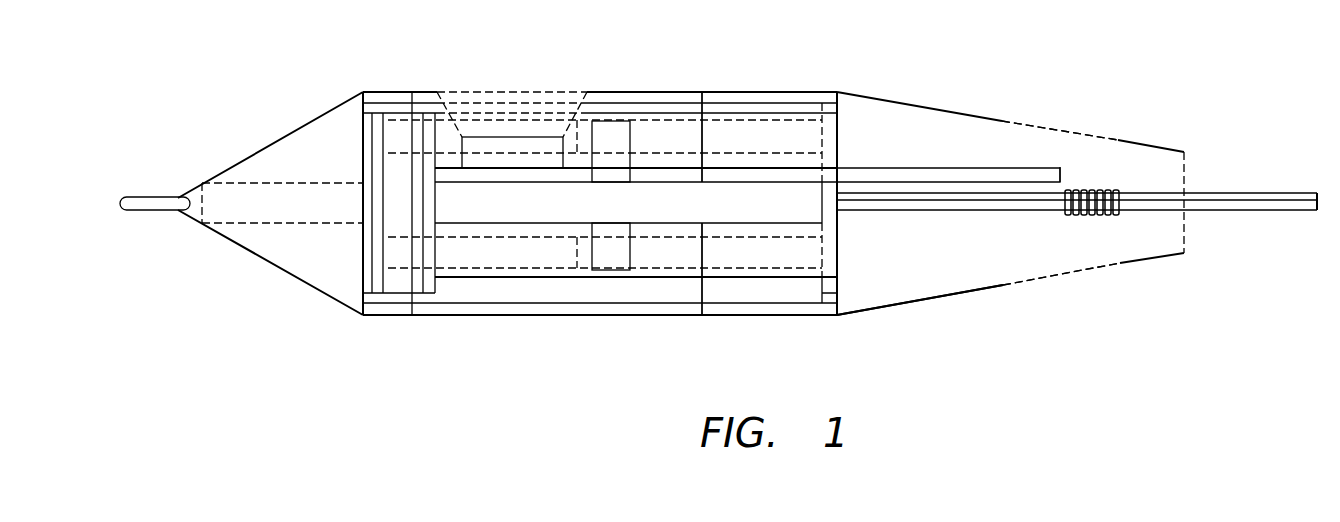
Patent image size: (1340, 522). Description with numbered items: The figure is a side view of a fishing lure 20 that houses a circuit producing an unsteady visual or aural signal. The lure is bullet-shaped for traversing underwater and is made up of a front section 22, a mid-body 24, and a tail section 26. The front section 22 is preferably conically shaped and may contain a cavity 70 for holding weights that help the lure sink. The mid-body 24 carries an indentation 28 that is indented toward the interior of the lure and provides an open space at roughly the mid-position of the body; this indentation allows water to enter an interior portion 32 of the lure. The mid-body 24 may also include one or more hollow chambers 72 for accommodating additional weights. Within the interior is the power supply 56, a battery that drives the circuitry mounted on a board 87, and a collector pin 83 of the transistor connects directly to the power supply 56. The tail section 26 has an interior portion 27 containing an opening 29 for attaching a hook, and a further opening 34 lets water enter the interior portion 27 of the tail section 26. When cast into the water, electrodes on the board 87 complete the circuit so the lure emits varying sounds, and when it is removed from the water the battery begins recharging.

The fishing lure 20 is at (1276, 110).
The front section 22 is at (273, 270).
The mid-body 24 is at (536, 318).
The tail section 26 is at (1160, 146).
The interior portion 27 is at (912, 280).
The indentation 28 is at (503, 89).
The opening 29 is at (1100, 215).
The interior portion 32 is at (612, 272).
The opening 34 is at (1065, 127).
The power supply 56 is at (484, 215).
The cavity 70 is at (223, 208).
The hollow chambers 72 is at (808, 146).
The collector pin 83 is at (955, 168).
The board 87 is at (1062, 176).